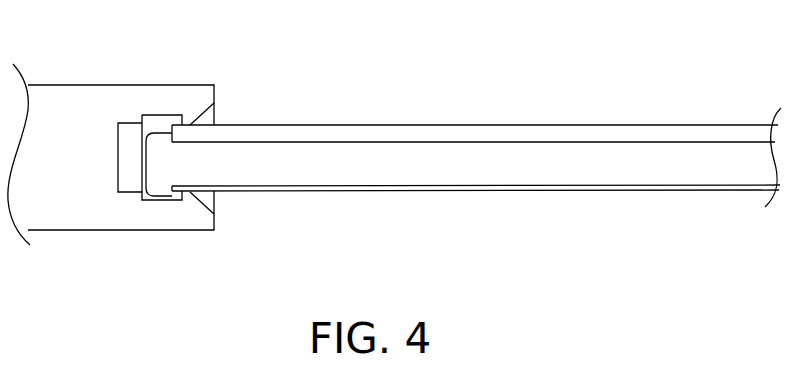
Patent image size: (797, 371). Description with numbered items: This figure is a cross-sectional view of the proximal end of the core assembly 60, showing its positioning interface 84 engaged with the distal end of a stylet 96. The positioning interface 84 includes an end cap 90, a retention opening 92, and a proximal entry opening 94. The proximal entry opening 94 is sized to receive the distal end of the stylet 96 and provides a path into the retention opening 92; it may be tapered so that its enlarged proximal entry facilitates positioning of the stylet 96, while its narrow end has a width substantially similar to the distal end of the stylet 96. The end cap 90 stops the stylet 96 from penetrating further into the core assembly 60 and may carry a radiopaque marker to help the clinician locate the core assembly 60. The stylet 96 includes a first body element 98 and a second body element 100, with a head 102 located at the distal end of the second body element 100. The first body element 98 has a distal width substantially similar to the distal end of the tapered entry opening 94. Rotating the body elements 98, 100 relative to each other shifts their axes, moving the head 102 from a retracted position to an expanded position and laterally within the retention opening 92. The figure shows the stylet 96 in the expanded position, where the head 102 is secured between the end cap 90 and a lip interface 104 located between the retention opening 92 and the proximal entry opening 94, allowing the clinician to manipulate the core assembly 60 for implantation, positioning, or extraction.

The core assembly 60 is at (55, 105).
The positioning interface 84 is at (173, 156).
The end cap 90 is at (118, 157).
The retention opening 92 is at (155, 201).
The proximal entry opening 94 is at (205, 195).
The stylet 96 is at (476, 162).
The first body element 98 is at (355, 137).
The second body element 100 is at (372, 175).
The head 102 is at (157, 152).
The lip interface 104 is at (172, 199).